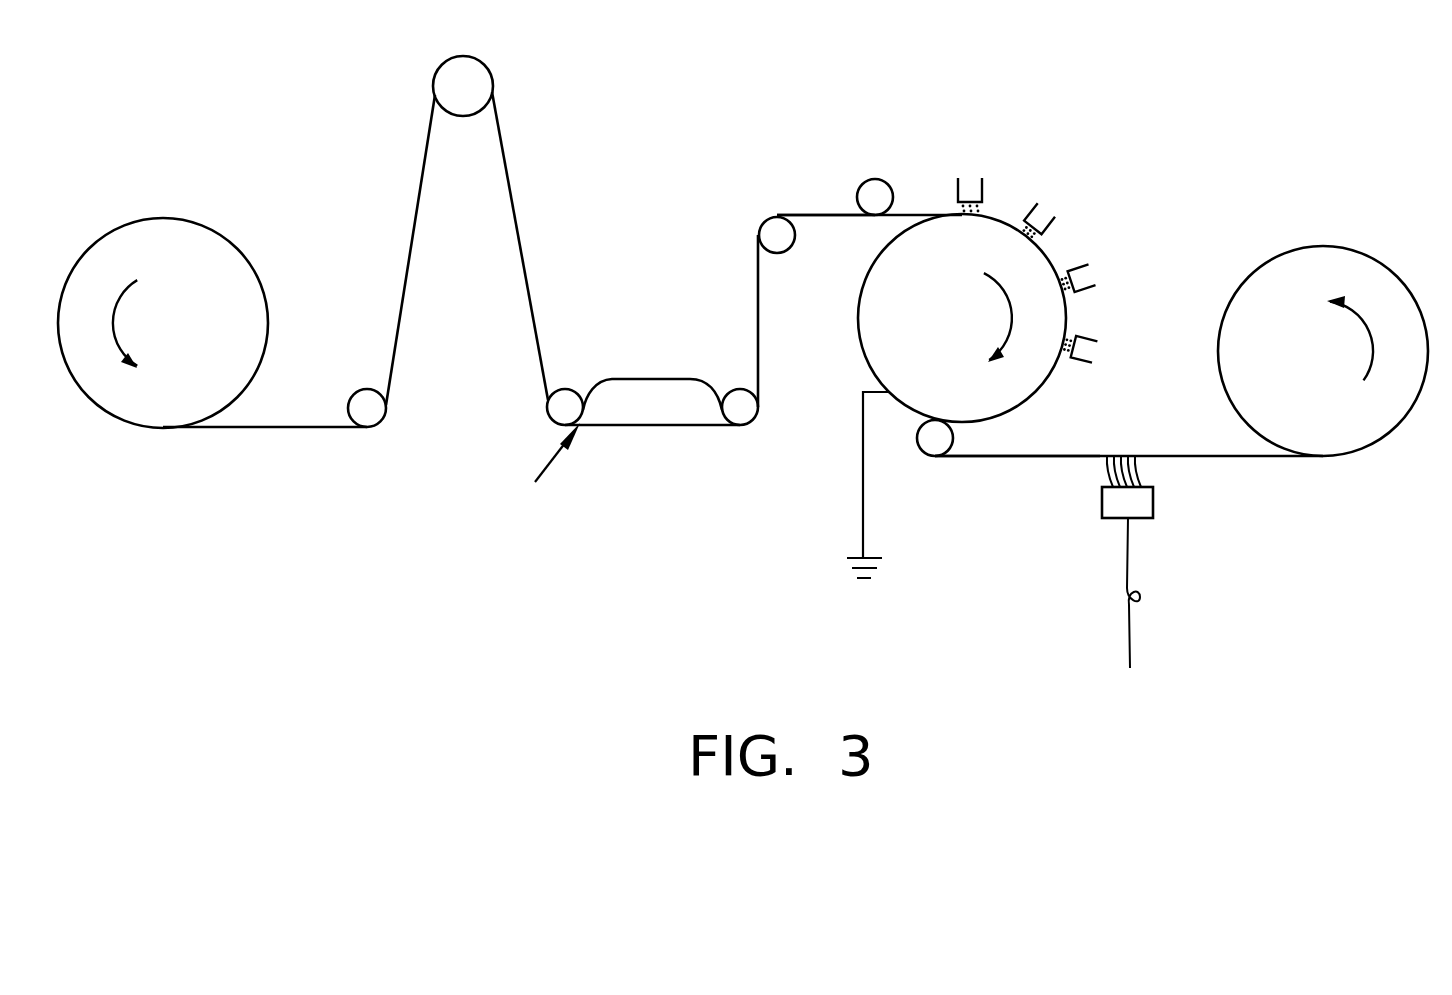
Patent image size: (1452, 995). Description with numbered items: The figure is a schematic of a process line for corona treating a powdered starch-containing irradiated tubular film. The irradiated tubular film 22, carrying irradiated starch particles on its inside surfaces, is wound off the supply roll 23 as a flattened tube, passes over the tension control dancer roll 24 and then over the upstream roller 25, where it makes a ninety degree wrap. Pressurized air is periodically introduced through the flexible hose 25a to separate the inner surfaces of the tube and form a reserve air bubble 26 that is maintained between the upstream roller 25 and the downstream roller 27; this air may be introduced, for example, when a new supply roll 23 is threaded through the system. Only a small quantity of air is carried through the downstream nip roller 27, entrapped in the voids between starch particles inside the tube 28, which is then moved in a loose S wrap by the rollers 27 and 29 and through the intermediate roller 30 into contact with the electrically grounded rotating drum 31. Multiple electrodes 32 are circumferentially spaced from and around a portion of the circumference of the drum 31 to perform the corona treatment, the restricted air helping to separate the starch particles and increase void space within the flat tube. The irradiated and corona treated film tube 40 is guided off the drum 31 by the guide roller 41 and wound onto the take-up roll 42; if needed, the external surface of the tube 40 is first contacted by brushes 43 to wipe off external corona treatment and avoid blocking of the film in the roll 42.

The irradiated tubular film 22 is at (307, 428).
The supply roll 23 is at (177, 220).
The tension control dancer roll 24 is at (462, 77).
The upstream roller 25 is at (565, 398).
The flexible hose 25a is at (550, 463).
The reserve air bubble 26 is at (648, 378).
The downstream roller 27 is at (742, 408).
The tube 28 is at (822, 215).
The roller 29 is at (773, 232).
The intermediate roller 30 is at (878, 193).
The electrically grounded rotating drum 31 is at (877, 335).
The electrodes 32 is at (983, 190).
The irradiated and corona treated film tube 40 is at (1052, 457).
The guide roller 41 is at (927, 447).
The take-up roll 42 is at (1268, 277).
The brushes 43 is at (1145, 502).